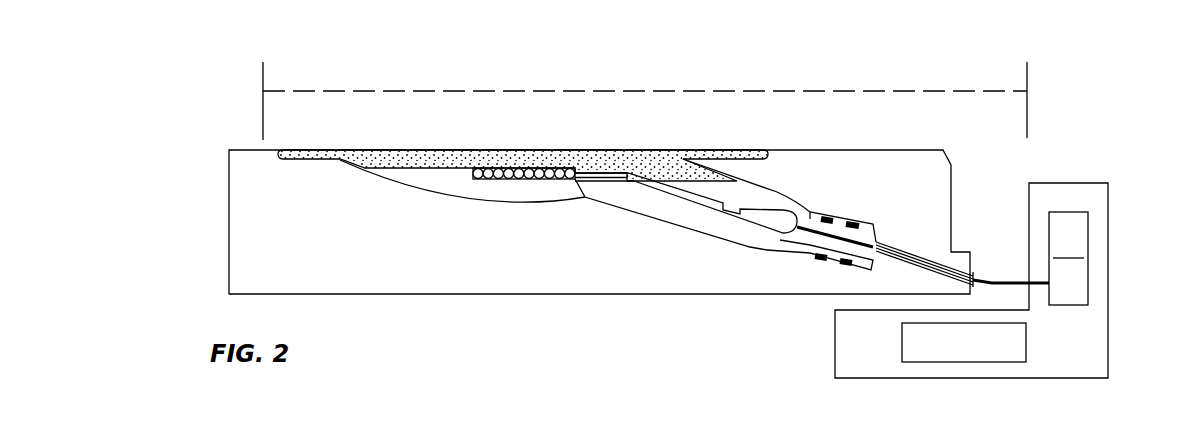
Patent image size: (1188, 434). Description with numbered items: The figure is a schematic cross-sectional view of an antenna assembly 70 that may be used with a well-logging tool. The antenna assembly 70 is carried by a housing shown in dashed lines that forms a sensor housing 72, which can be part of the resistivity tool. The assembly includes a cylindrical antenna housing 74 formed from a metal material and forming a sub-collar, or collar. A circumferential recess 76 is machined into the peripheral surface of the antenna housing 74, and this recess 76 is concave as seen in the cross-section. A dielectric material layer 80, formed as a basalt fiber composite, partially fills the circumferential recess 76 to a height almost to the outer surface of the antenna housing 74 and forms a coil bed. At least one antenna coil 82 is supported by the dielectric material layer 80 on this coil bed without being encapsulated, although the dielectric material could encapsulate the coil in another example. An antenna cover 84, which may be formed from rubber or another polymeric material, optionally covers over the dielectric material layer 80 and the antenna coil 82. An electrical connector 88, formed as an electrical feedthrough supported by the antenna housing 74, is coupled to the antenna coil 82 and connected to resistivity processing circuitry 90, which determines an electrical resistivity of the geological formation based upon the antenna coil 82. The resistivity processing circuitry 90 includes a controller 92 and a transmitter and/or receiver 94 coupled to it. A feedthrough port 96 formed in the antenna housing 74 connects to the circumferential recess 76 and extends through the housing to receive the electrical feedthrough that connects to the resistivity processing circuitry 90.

The antenna assembly 70 is at (718, 66).
The sensor housing 72 is at (414, 90).
The cylindrical antenna housing 74 is at (229, 252).
The circumferential recess 76 is at (430, 193).
The dielectric material layer 80 is at (441, 178).
The antenna coil 82 is at (501, 167).
The antenna cover 84 is at (616, 145).
The electrical connector 88 is at (882, 224).
The resistivity processing circuitry 90 is at (1072, 183).
The controller 92 is at (992, 362).
The transmitter and/or receiver 94 is at (1088, 242).
The feedthrough port 96 is at (751, 248).